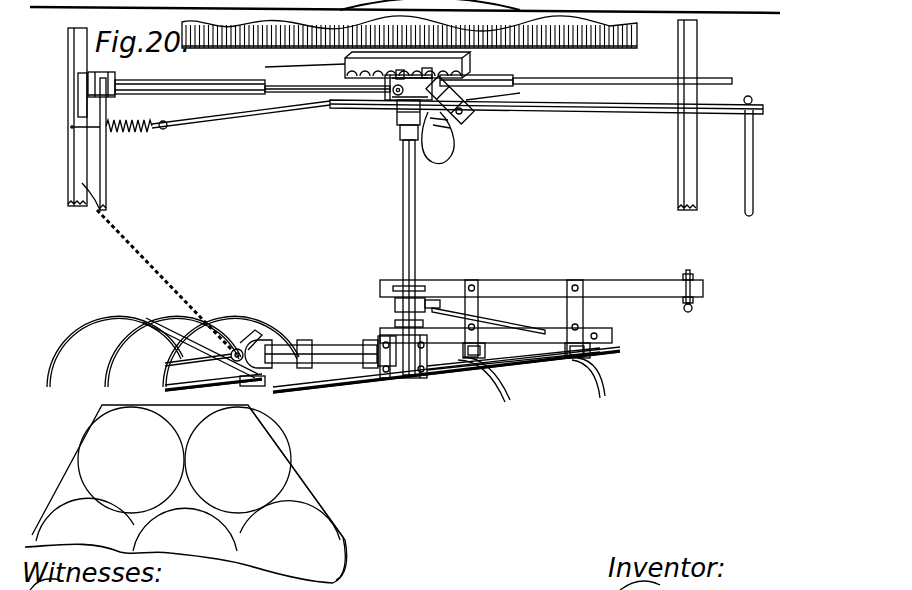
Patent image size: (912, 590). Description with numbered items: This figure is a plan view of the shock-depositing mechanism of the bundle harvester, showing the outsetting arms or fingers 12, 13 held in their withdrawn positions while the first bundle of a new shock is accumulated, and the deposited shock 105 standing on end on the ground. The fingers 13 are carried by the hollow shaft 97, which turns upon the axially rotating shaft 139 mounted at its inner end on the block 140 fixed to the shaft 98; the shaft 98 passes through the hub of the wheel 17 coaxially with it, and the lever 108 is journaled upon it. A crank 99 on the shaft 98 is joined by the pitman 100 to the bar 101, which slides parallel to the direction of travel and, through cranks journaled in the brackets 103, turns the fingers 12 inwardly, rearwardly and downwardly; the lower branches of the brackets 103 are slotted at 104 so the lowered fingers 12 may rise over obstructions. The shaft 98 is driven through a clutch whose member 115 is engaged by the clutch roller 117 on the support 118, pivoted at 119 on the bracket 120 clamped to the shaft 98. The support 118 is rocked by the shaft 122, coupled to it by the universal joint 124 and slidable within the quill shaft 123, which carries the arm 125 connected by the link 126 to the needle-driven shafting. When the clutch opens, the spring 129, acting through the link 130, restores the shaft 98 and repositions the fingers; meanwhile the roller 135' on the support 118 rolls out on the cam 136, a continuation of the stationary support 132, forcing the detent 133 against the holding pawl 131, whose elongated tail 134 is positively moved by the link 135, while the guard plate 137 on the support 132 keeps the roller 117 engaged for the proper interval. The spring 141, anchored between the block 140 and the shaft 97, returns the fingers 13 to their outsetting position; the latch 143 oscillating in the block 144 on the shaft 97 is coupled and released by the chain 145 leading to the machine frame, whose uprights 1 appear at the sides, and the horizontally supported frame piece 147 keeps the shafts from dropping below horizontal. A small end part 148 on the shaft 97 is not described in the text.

The upright post 1 is at (68, 45).
The outsetting arms 12 is at (214, 385).
The fingers 13 is at (55, 354).
The wheel 17 is at (409, 43).
The hollow shaft 97 is at (333, 352).
The shaft 98 is at (418, 241).
The crank 99 is at (426, 297).
The pitman 100 is at (496, 317).
The bar 101 is at (556, 344).
The brackets 103 is at (466, 292).
The slots 104 is at (503, 386).
The shock 105 is at (98, 447).
The lever 108 is at (487, 346).
The clutch member 115 is at (350, 60).
The clutch roller 117 is at (448, 96).
The clutch roller support 118 is at (461, 113).
The pivot 119 is at (398, 106).
The bracket 120 is at (401, 126).
The shaft 122 is at (292, 86).
The quill shaft 123 is at (189, 84).
The universal joint 124 is at (392, 96).
The arm 125 is at (88, 73).
The link 126 is at (107, 181).
The spring 129 is at (152, 131).
The link 130 is at (256, 118).
The holding pawl 131 is at (433, 146).
The stationary support 132 is at (492, 79).
The detent 133 is at (431, 159).
The elongated tail 134 is at (665, 102).
The link 135 is at (769, 163).
The roller 135' is at (507, 104).
The cam 136 is at (426, 70).
The guard plate 137 is at (404, 76).
The axially rotating shaft 139 is at (235, 348).
The block 140 is at (440, 372).
The spring 141 is at (356, 344).
The latch 143 is at (302, 342).
The block 144 is at (258, 386).
The chain 145 is at (138, 252).
The motion limiting frame piece 147 is at (637, 289).
The cap 148 is at (263, 338).